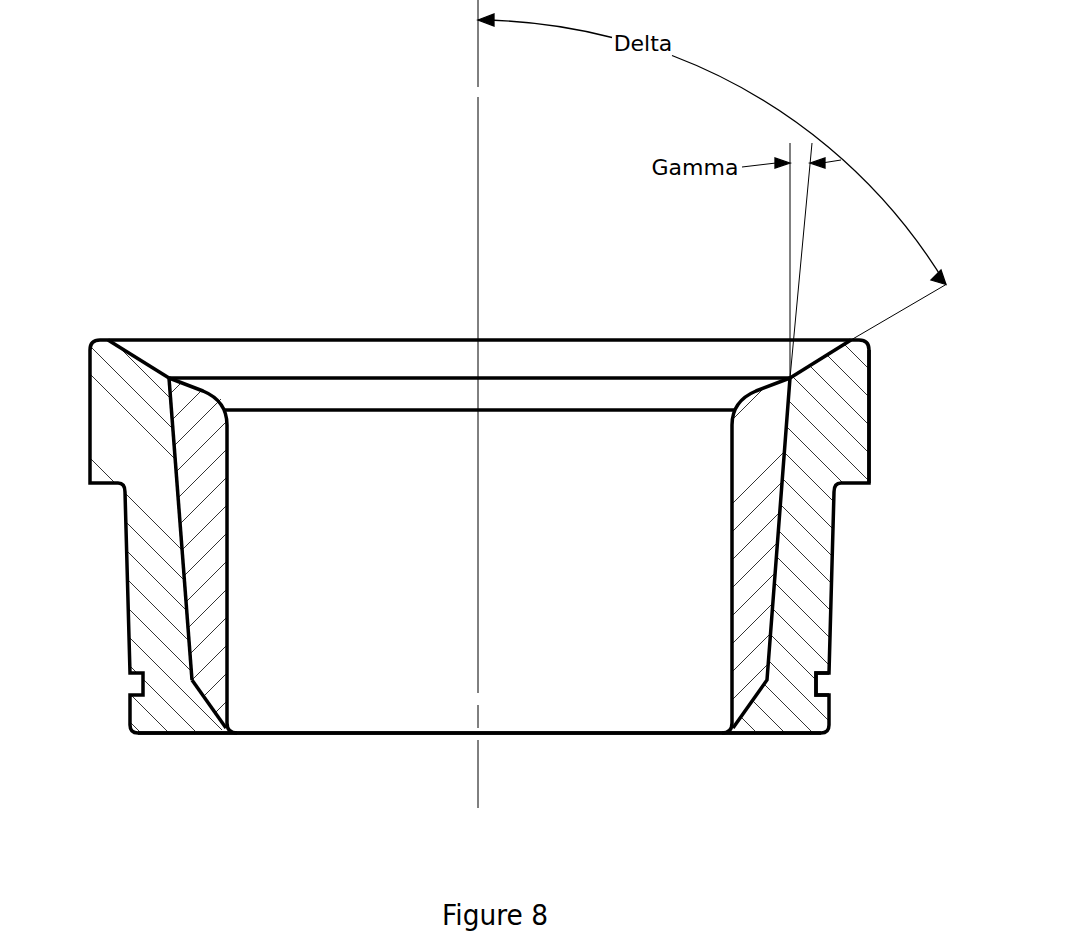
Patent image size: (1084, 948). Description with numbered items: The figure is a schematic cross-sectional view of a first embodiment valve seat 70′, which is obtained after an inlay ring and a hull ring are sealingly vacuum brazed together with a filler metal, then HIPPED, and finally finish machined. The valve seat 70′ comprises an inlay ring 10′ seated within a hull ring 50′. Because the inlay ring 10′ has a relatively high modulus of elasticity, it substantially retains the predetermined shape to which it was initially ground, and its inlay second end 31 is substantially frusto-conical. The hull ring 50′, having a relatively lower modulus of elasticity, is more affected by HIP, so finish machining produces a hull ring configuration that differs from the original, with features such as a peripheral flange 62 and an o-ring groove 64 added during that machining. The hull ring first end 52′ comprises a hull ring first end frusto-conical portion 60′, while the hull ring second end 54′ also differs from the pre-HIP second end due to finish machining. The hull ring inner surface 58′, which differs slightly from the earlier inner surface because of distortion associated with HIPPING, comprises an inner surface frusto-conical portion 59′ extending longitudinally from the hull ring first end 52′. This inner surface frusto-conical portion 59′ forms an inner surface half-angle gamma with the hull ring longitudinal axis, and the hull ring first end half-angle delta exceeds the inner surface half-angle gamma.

The valve seat 70′ is at (93, 258).
The hull ring 50′ is at (101, 452).
The hull ring first end 52′ is at (129, 346).
The hull ring inner surface 58′ is at (768, 357).
The hull ring first end frusto-conical portion 60′ is at (157, 308).
The inner surface frusto-conical portion 59′ is at (180, 487).
The inlay second end 31 is at (228, 723).
The inlay ring 10′ is at (740, 443).
The peripheral flange 62 is at (869, 405).
The o-ring groove 64 is at (821, 683).
The hull ring second end 54′ is at (178, 735).